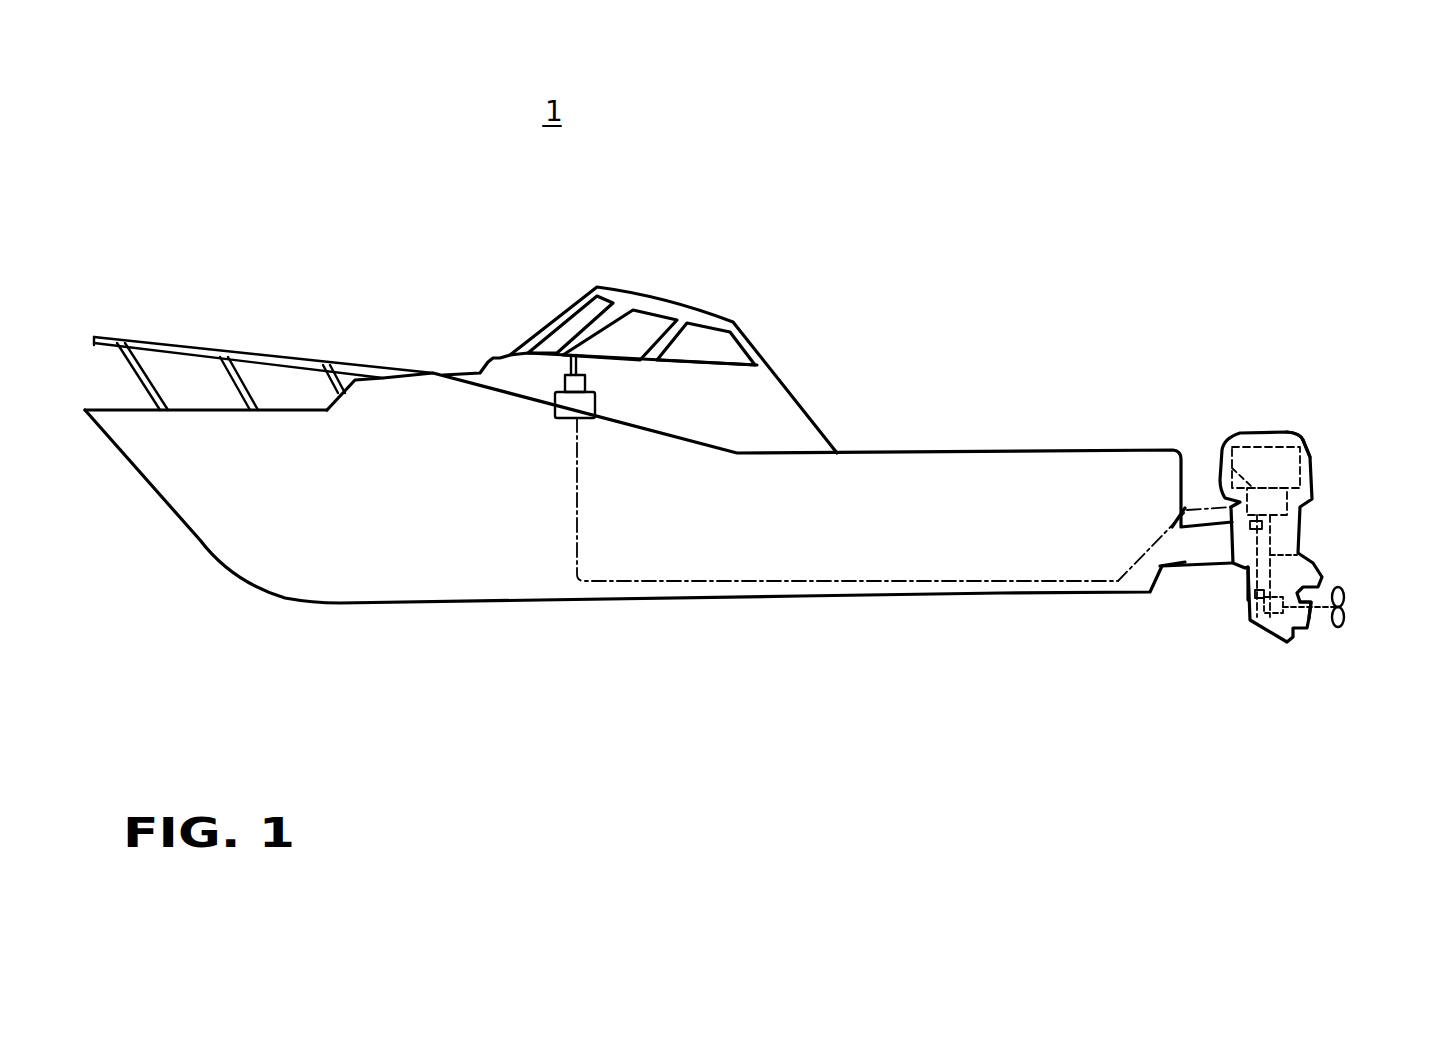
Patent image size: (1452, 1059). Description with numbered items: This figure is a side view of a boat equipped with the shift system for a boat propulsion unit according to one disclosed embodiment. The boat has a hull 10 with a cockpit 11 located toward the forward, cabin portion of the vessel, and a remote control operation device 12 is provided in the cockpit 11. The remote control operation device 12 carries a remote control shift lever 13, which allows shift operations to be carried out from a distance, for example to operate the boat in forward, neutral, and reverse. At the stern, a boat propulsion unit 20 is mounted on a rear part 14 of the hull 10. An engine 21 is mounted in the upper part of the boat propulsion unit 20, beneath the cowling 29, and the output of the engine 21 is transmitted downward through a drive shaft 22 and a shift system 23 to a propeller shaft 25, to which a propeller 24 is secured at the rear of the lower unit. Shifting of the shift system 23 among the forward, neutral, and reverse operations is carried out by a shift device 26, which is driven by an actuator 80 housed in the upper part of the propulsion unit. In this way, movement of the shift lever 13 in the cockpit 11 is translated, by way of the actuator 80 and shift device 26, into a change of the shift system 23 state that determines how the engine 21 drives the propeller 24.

The hull 10 is at (540, 599).
The cockpit 11 is at (670, 312).
The remote control operation device 12 is at (553, 410).
The remote control shift lever 13 is at (559, 348).
The rear part 14 is at (1183, 563).
The boat propulsion unit 20 is at (1258, 429).
The engine 21 is at (1313, 461).
The drive shaft 22 is at (1300, 557).
The shift system 23 is at (1271, 632).
The propeller 24 is at (1346, 600).
The propeller shaft 25 is at (1317, 618).
The shift device 26 is at (1248, 583).
The cowling 29 is at (1305, 438).
The actuator 80 is at (1232, 468).